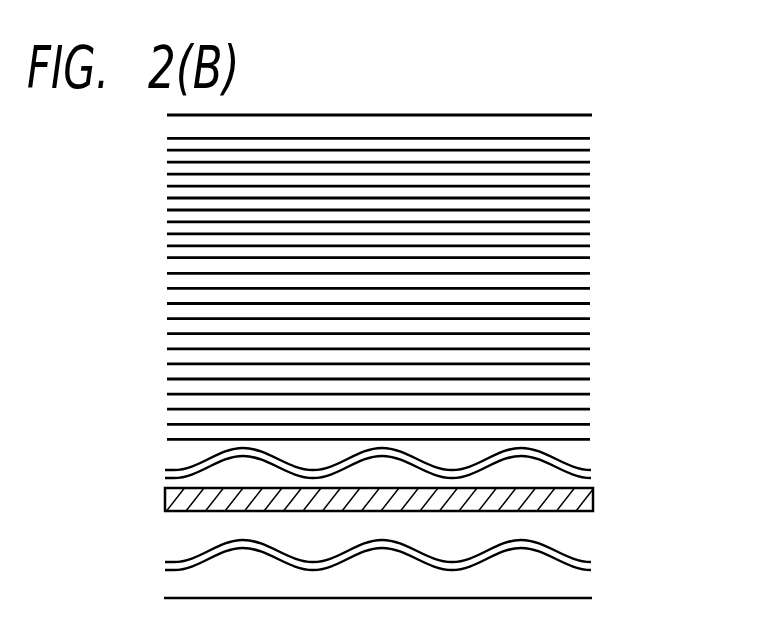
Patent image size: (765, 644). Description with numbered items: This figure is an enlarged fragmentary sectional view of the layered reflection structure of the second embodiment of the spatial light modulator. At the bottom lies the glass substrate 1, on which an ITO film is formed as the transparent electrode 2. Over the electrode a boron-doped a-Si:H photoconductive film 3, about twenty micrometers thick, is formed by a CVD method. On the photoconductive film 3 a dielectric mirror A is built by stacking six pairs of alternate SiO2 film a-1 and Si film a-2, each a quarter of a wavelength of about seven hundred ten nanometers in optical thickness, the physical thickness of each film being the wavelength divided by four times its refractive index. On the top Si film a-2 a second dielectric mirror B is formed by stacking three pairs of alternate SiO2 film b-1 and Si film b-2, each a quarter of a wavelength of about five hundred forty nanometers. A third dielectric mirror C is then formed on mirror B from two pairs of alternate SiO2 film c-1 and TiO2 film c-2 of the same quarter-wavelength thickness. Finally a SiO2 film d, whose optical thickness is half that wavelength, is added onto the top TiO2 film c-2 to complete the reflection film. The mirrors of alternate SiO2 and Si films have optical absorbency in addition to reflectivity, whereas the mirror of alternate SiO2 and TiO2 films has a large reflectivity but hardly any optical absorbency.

The glass substrate 1 is at (597, 570).
The transparent electrode 2 is at (587, 504).
The photoconductive film 3 is at (586, 462).
The SiO2 film a-1 is at (584, 289).
The Si film a-2 is at (171, 264).
The SiO2 film b-1 is at (584, 210).
The Si film b-2 is at (171, 187).
The SiO2 film c-1 is at (584, 160).
The TiO2 film c-2 is at (171, 131).
The SiO2 film d is at (584, 129).